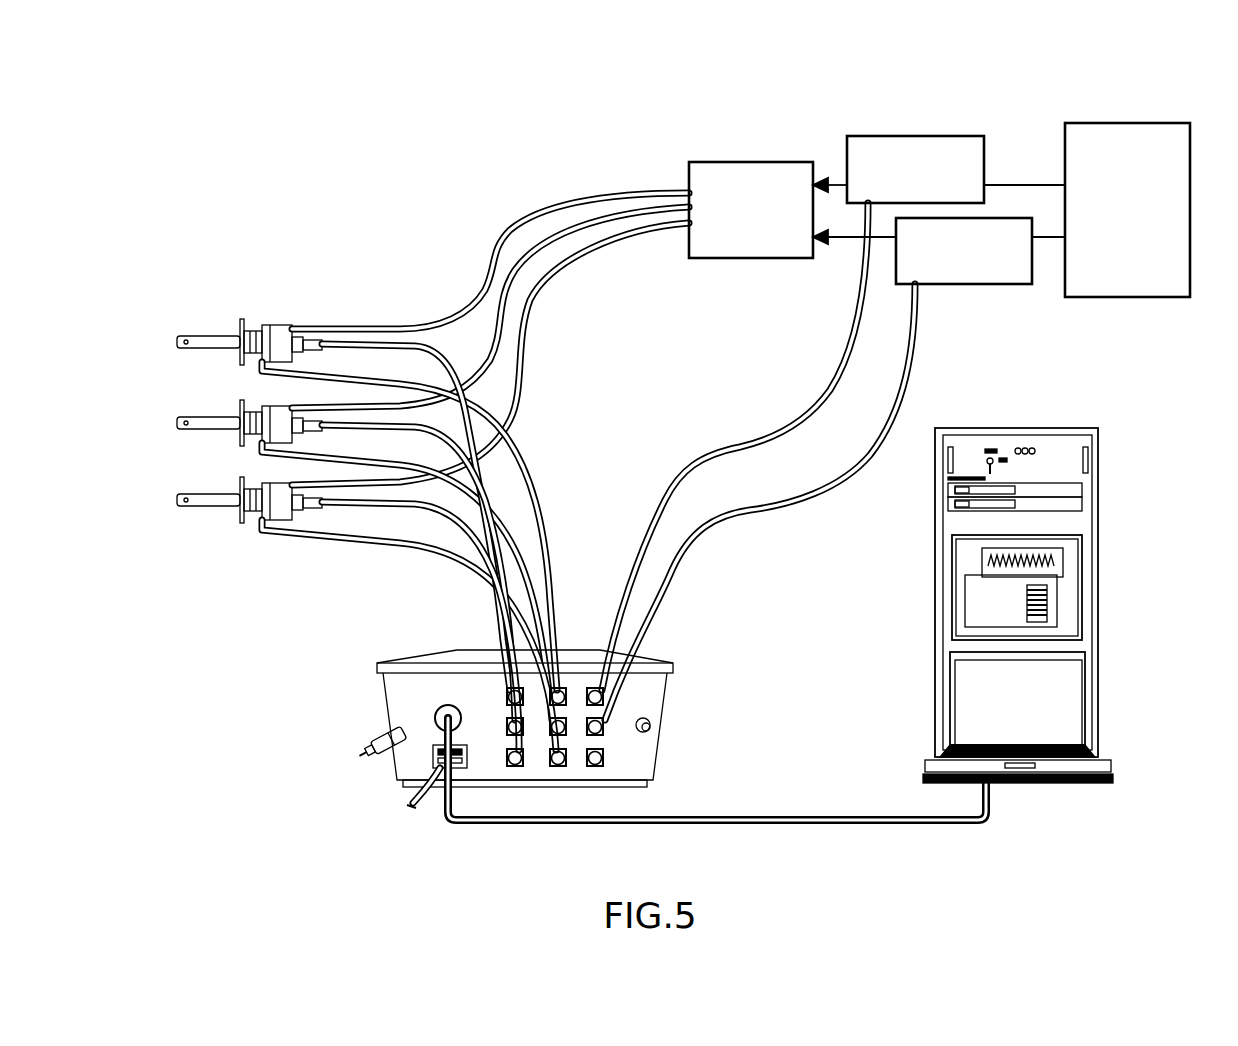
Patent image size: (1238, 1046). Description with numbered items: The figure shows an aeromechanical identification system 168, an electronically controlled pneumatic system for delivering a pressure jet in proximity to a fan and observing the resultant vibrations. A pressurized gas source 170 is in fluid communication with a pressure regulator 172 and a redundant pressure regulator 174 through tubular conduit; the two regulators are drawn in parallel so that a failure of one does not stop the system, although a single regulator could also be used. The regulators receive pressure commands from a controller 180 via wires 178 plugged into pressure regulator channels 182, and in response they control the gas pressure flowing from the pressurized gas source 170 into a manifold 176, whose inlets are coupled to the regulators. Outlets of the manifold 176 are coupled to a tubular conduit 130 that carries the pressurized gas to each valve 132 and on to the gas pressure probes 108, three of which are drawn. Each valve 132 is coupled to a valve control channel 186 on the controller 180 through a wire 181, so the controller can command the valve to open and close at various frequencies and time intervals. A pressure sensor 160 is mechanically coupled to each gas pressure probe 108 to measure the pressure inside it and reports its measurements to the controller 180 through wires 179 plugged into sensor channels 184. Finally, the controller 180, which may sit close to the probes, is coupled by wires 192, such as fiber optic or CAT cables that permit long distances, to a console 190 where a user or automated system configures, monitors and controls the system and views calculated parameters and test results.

The aeromechanical identification system 168 is at (198, 202).
The gas pressure probe 108 is at (201, 336).
The valve 132 is at (283, 322).
The tubular conduit 130 is at (604, 200).
The pressure sensor 160 is at (265, 374).
The manifold 176 is at (742, 160).
The pressure regulator 172 is at (902, 135).
The redundant pressure regulator 174 is at (1002, 217).
The pressurized gas source 170 is at (1124, 122).
The wires 178 is at (757, 443).
The wires 179 is at (541, 481).
The wire 181 is at (496, 612).
The controller 180 is at (655, 690).
The pressure regulator channels 182 is at (606, 690).
The sensor channels 184 is at (585, 682).
The valve control channel 186 is at (508, 750).
The console 190 is at (1098, 552).
The wires 192 is at (792, 817).